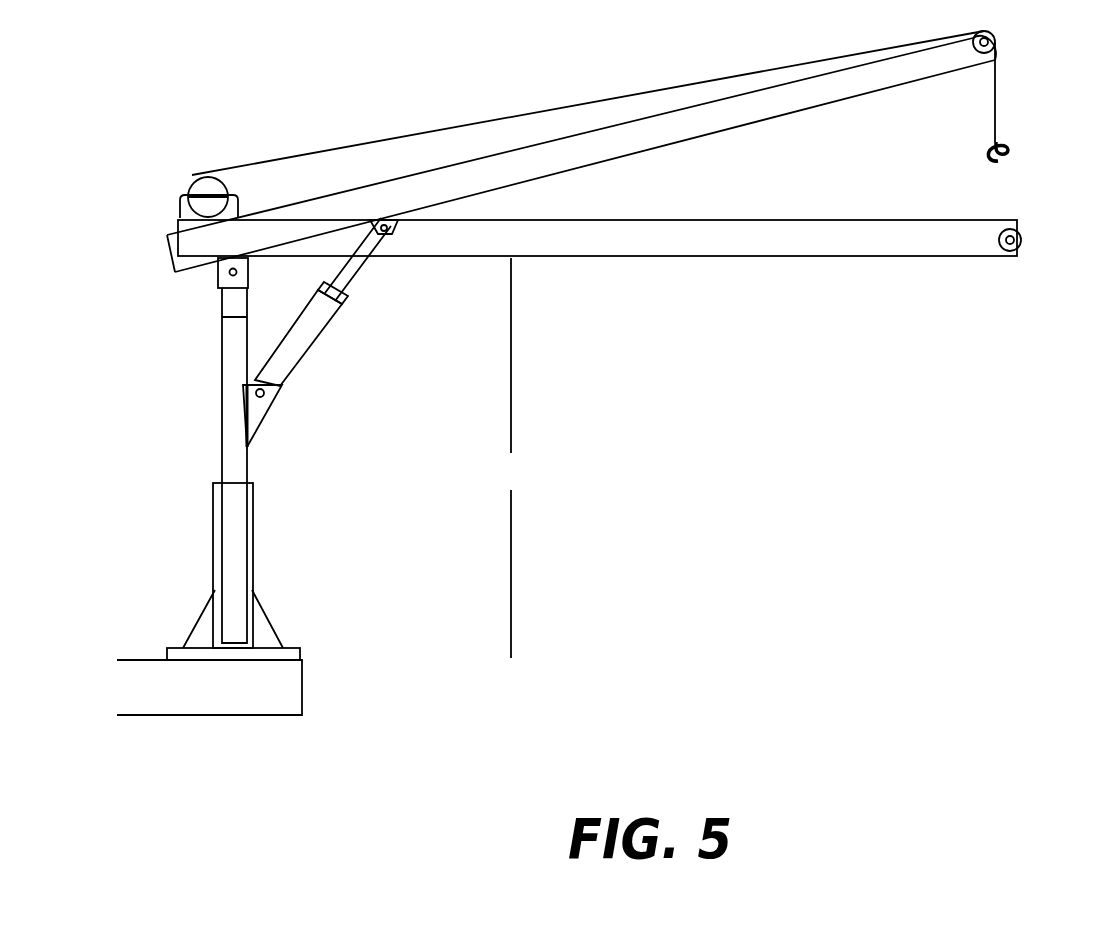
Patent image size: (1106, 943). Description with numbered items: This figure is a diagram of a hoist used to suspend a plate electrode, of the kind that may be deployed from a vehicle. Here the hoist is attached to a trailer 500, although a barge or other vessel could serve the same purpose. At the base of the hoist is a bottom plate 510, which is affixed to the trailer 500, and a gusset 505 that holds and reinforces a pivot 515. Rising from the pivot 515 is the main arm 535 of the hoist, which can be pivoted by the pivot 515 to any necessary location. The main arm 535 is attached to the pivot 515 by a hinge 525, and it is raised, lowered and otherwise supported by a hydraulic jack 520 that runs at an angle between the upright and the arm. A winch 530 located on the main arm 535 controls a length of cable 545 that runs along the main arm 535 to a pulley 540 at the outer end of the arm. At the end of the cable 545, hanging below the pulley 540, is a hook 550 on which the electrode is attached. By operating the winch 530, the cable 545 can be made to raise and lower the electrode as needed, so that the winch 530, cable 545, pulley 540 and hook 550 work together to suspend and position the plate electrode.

The trailer 500 is at (210, 687).
The gusset 505 is at (199, 620).
The bottom plate 510 is at (292, 657).
The pivot 515 is at (260, 468).
The hydraulic jack 520 is at (350, 332).
The hinge 525 is at (205, 297).
The winch 530 is at (185, 182).
The main arm 535 is at (592, 347).
The pulley 540 is at (1030, 156).
The cable 545 is at (626, 103).
The hook 550 is at (1011, 182).